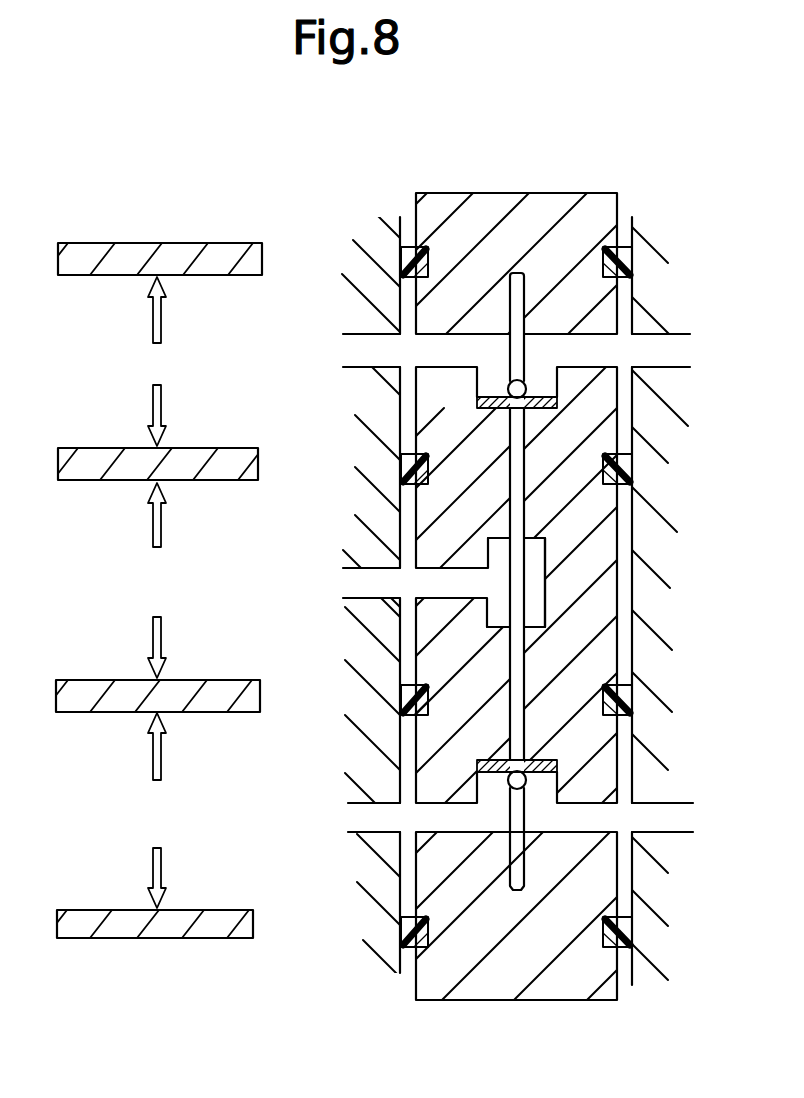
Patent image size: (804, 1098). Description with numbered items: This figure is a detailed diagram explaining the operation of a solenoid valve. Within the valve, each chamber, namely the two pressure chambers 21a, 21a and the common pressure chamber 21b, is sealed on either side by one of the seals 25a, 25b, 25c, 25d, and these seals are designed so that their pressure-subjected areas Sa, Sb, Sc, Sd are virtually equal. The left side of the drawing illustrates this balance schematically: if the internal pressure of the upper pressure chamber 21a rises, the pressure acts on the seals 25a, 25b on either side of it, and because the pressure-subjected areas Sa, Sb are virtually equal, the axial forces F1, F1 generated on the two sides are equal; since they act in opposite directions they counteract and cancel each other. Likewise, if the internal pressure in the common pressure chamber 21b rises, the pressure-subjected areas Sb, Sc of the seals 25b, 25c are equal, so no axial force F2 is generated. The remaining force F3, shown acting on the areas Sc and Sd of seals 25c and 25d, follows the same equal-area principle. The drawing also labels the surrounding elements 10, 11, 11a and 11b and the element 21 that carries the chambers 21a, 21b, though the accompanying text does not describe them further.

The valve housing body 10 is at (662, 755).
The cylinder bore of housing 11 is at (630, 636).
The right-side ports of cylinder bore 11a is at (663, 352).
The left-side ports of cylinder bore 11b is at (358, 367).
The spool piston 21 is at (594, 190).
The pressure chamber 21a is at (547, 353).
The common pressure chamber 21b is at (546, 588).
The seal 25a is at (633, 263).
The seal 25b is at (632, 468).
The seal 25c is at (632, 700).
The seal 25d is at (632, 940).
The pressure-subjected area Sa is at (238, 277).
The pressure-subjected area Sb is at (233, 447).
The pressure-subjected area Sc is at (213, 679).
The pressure-subjected area Sd is at (212, 908).
The axial force F1 is at (141, 361).
The axial force F2 is at (139, 580).
The force F3 is at (138, 810).